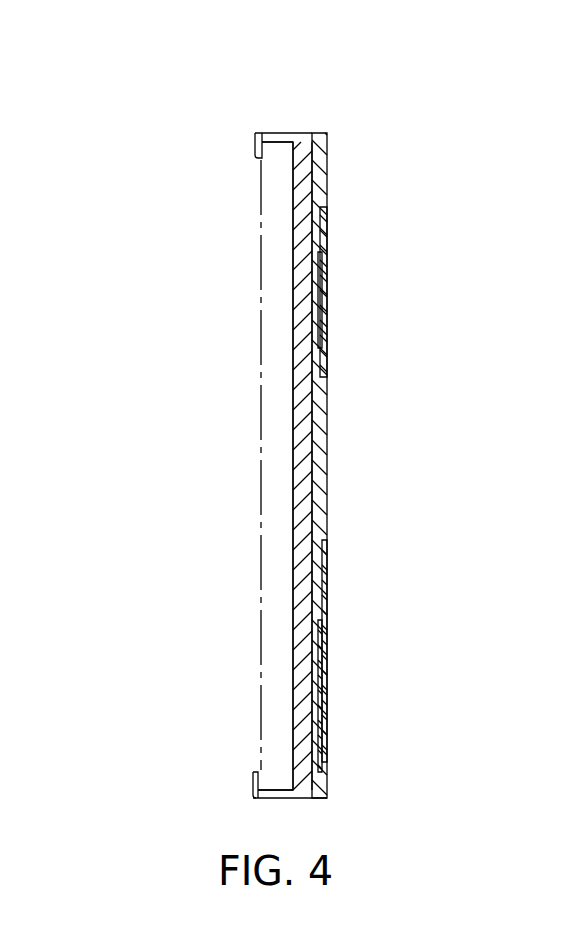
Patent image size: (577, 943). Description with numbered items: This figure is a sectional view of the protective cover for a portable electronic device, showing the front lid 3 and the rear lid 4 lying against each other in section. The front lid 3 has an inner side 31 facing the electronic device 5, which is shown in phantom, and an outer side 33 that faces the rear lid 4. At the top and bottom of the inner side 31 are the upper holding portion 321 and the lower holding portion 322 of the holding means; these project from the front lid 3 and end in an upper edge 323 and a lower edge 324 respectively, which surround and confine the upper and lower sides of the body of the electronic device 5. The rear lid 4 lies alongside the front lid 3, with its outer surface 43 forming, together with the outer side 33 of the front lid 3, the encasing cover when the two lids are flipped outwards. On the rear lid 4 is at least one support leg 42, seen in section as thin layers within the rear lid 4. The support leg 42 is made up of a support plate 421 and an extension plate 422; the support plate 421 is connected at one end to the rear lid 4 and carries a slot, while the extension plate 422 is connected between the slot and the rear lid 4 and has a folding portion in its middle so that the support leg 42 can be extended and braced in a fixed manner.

The front lid 3 is at (300, 230).
The inner side 31 is at (293, 282).
The upper holding portion 321 is at (262, 133).
The lower holding portion 322 is at (270, 798).
The upper edge 323 is at (258, 148).
The lower edge 324 is at (253, 782).
The outer side 33 is at (310, 437).
The rear lid 4 is at (327, 157).
The outer surface 43 is at (327, 180).
The support leg 42 is at (455, 613).
The support plate 421 is at (325, 595).
The extension plate 422 is at (325, 667).
The electronic device 5 is at (262, 345).